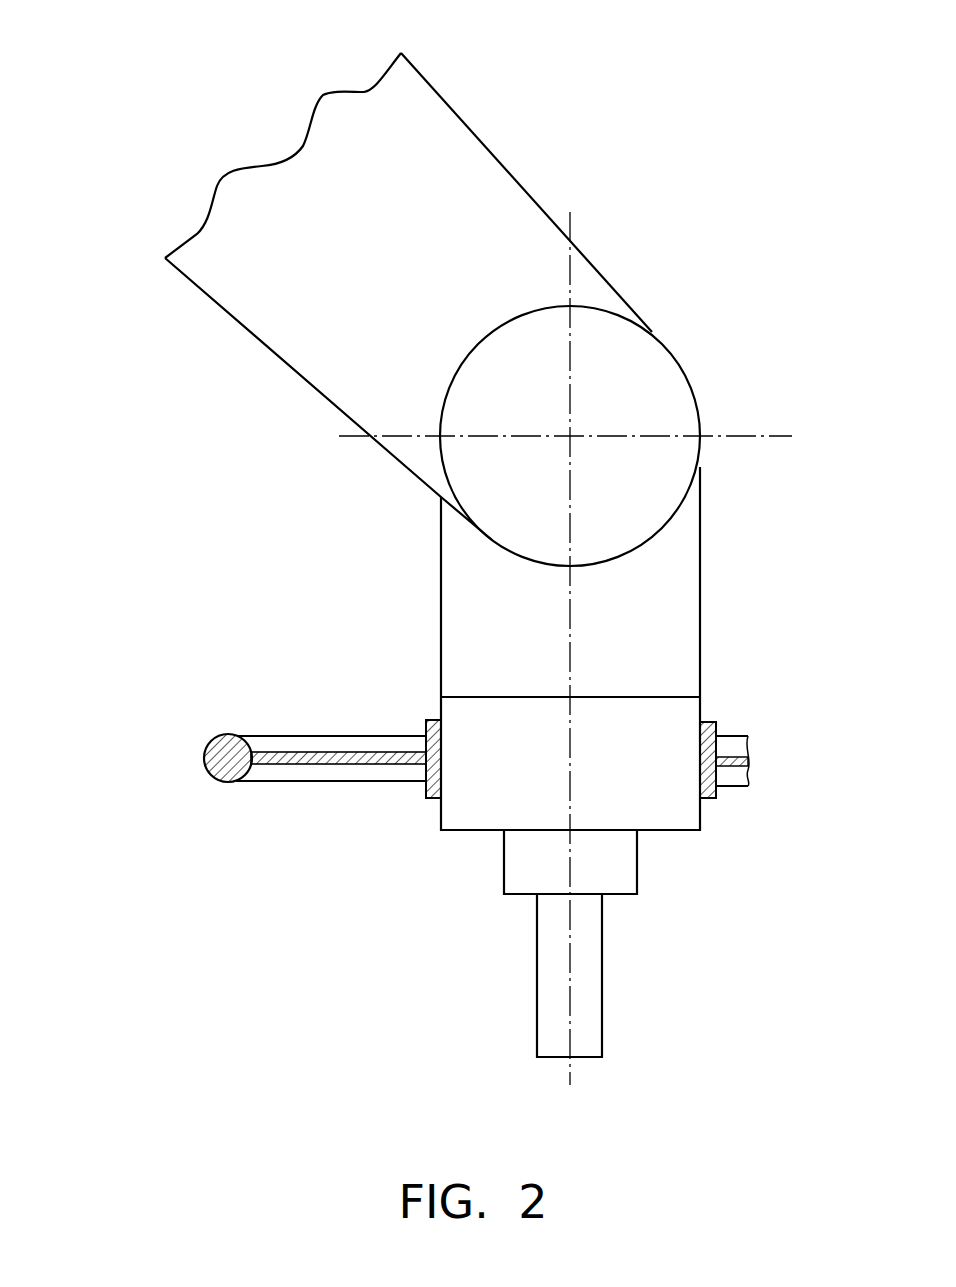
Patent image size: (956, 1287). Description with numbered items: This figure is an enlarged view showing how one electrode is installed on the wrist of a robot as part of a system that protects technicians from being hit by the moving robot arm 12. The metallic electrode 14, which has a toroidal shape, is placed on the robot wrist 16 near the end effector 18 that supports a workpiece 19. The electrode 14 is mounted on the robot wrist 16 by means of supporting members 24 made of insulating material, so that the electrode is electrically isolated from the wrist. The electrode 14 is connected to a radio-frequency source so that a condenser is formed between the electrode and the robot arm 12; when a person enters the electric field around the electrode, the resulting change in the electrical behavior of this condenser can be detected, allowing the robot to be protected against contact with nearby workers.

The robot arm 12 is at (489, 188).
The electrode 14 is at (211, 736).
The robot wrist 16 is at (495, 740).
The end effector 18 is at (501, 855).
The workpiece 19 is at (535, 932).
The supporting members 24 is at (289, 765).